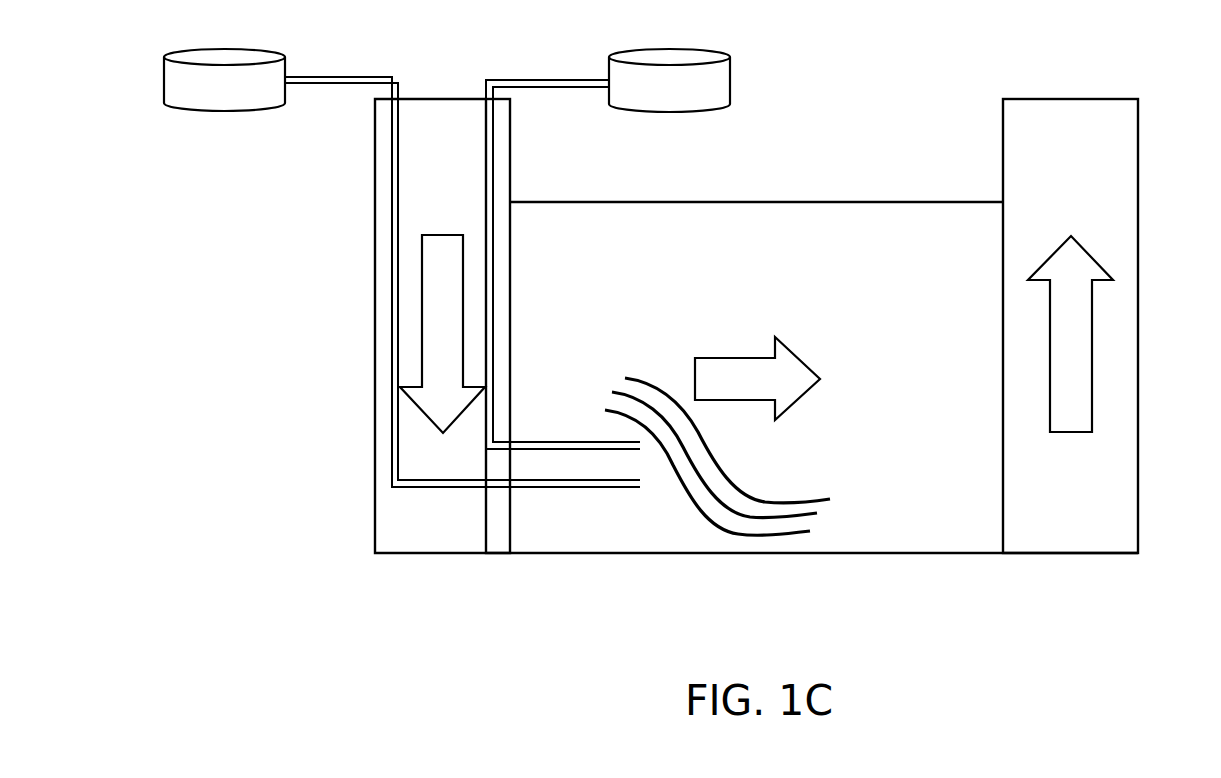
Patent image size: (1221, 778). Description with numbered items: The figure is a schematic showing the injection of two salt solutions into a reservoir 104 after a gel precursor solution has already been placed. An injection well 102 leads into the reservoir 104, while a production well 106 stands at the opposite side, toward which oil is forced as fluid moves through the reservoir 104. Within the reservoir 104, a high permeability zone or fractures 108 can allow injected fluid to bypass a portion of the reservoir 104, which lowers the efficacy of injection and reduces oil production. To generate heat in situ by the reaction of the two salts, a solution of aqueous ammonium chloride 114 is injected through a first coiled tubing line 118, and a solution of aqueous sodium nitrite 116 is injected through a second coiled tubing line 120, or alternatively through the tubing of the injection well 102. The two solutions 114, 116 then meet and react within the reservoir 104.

The injection well 102 is at (424, 99).
The reservoir 104 is at (750, 202).
The production well 106 is at (1092, 99).
The high permeability zone or fractures 108 is at (752, 538).
The NH4Cl solution 114 is at (668, 48).
The NaNO2 solution 116 is at (222, 48).
The first coiled tubing line 118 is at (493, 174).
The second coiled tubing line 120 is at (393, 436).